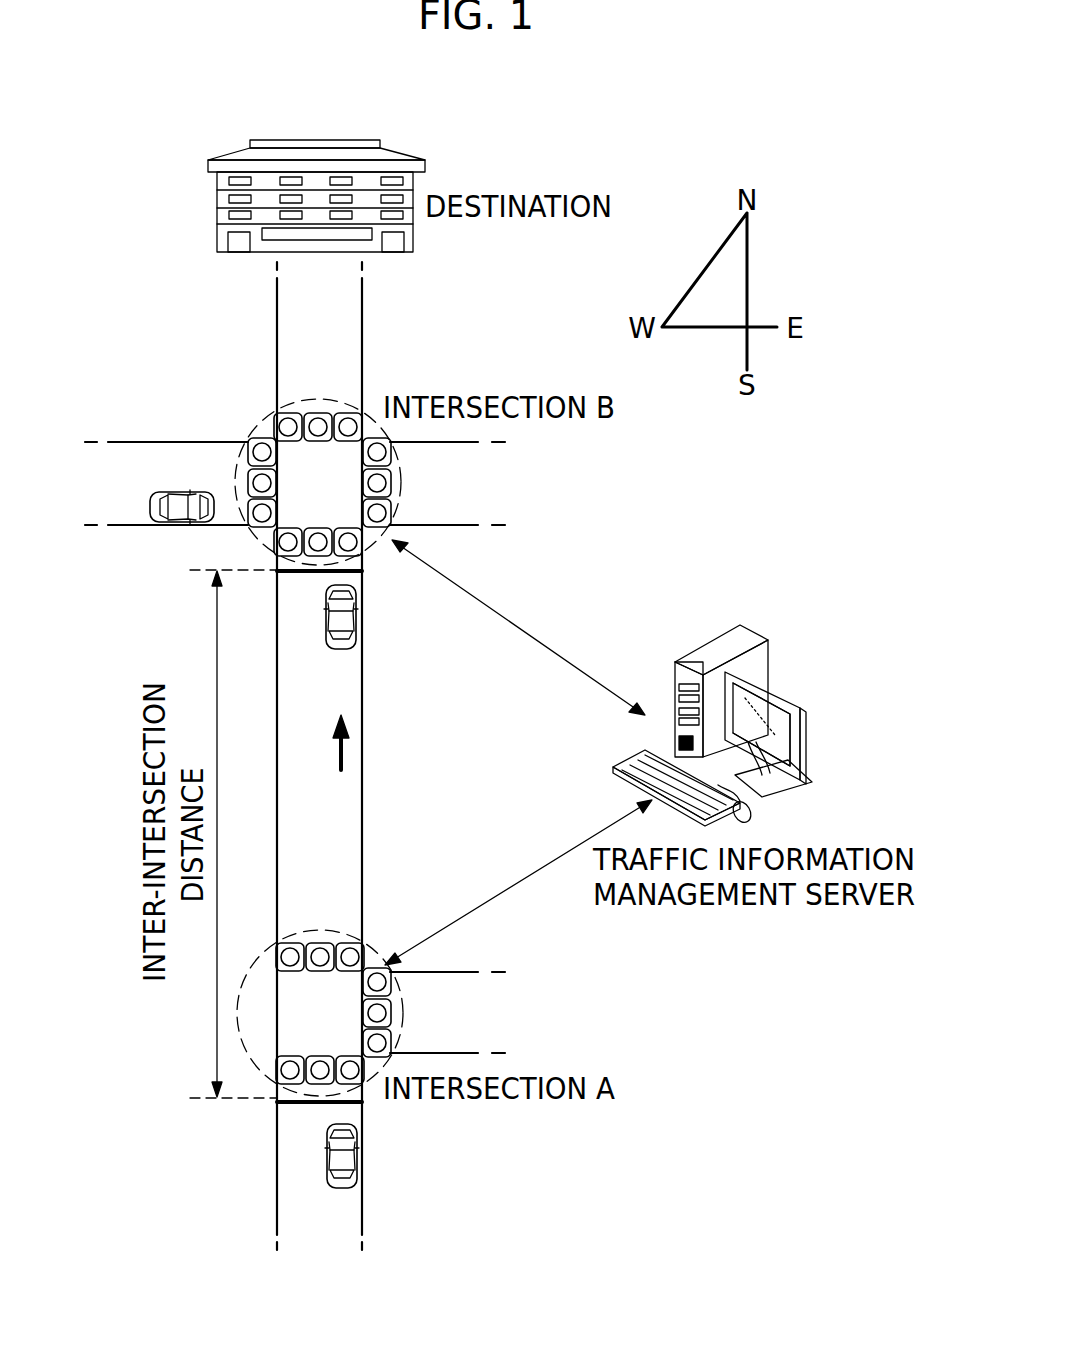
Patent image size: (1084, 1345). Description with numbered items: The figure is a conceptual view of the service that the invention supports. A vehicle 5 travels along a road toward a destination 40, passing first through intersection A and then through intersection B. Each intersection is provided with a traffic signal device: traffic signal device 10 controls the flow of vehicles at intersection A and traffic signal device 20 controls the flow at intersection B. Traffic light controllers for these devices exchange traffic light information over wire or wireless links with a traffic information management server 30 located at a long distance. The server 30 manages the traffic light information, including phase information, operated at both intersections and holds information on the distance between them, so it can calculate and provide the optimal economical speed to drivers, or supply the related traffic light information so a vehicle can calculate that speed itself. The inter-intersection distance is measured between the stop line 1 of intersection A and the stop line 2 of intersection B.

The stop line 1 is at (300, 1104).
The stop line 2 is at (303, 574).
The vehicle 5 is at (360, 1146).
The traffic signal device 10 is at (382, 944).
The traffic signal device 20 is at (272, 417).
The traffic information management server 30 is at (781, 622).
The destination 40 is at (410, 158).